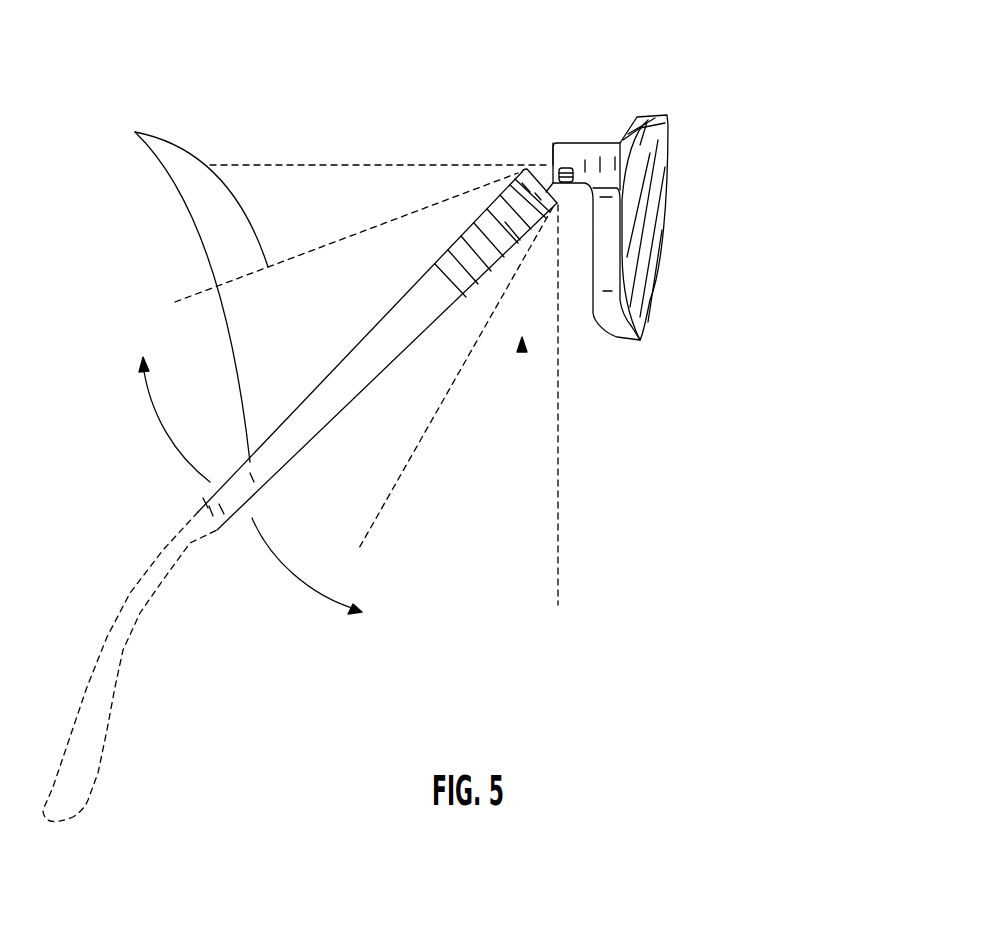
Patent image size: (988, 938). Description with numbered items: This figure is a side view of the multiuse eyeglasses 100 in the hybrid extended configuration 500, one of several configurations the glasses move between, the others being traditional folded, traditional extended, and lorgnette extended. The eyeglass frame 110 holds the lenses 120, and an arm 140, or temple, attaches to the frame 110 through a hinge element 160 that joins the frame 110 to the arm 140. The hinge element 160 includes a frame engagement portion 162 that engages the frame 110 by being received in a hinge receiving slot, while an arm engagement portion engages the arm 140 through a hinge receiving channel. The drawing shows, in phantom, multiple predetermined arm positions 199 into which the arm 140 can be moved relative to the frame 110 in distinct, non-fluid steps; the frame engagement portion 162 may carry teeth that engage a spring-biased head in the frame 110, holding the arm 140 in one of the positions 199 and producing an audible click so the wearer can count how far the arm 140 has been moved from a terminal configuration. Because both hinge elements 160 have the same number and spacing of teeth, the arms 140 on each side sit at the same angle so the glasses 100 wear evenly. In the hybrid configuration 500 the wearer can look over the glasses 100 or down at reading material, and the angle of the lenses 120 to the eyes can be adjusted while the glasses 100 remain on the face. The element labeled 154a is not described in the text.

The multiuse eyeglasses 100 is at (743, 307).
The eyeglass frame 110 is at (633, 117).
The lens 120 is at (658, 217).
The arm 140 is at (403, 323).
The hinge pin 154a is at (563, 166).
The hinge element 160 is at (520, 170).
The frame engagement portion 162 is at (548, 180).
The multiple predetermined arm positions 199 is at (263, 165).
The hybrid extended configuration 500 is at (522, 345).